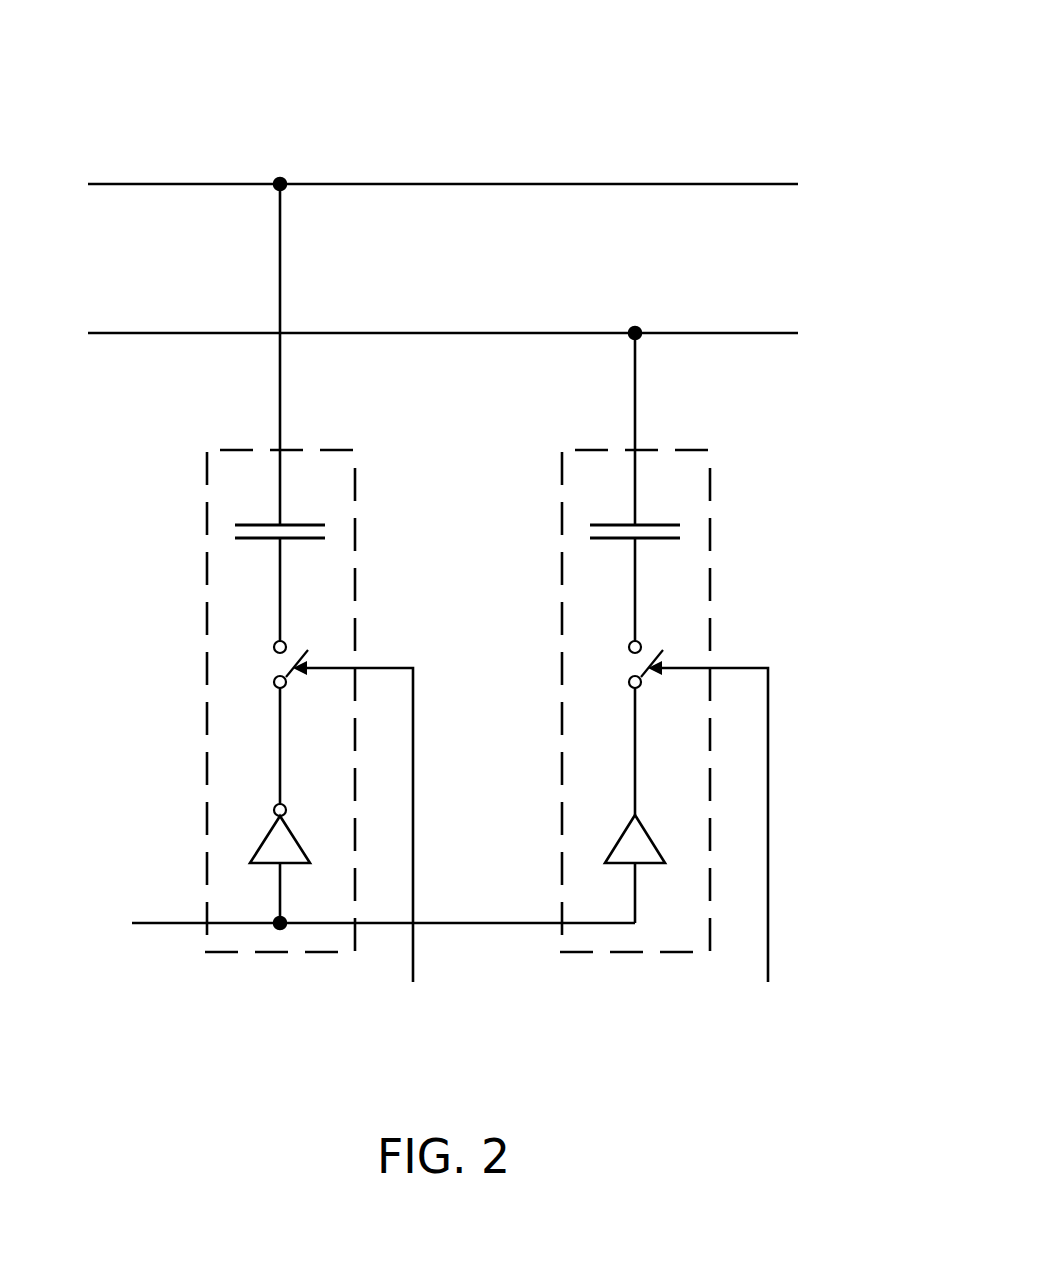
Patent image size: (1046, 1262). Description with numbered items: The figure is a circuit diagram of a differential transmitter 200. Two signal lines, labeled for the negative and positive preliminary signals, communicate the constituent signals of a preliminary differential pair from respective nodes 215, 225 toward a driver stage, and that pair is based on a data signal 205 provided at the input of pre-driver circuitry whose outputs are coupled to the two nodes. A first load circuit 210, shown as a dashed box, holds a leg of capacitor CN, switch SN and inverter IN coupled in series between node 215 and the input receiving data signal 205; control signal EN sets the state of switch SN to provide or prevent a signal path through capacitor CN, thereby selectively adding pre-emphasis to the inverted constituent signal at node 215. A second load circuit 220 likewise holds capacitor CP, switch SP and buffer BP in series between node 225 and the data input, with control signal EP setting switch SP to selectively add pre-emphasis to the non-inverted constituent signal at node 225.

The differential transmitter 200 is at (662, 80).
The data signal 205 is at (383, 911).
The first load circuit 210 is at (311, 436).
The node 215 is at (279, 158).
The second load circuit 220 is at (666, 436).
The node 225 is at (634, 308).